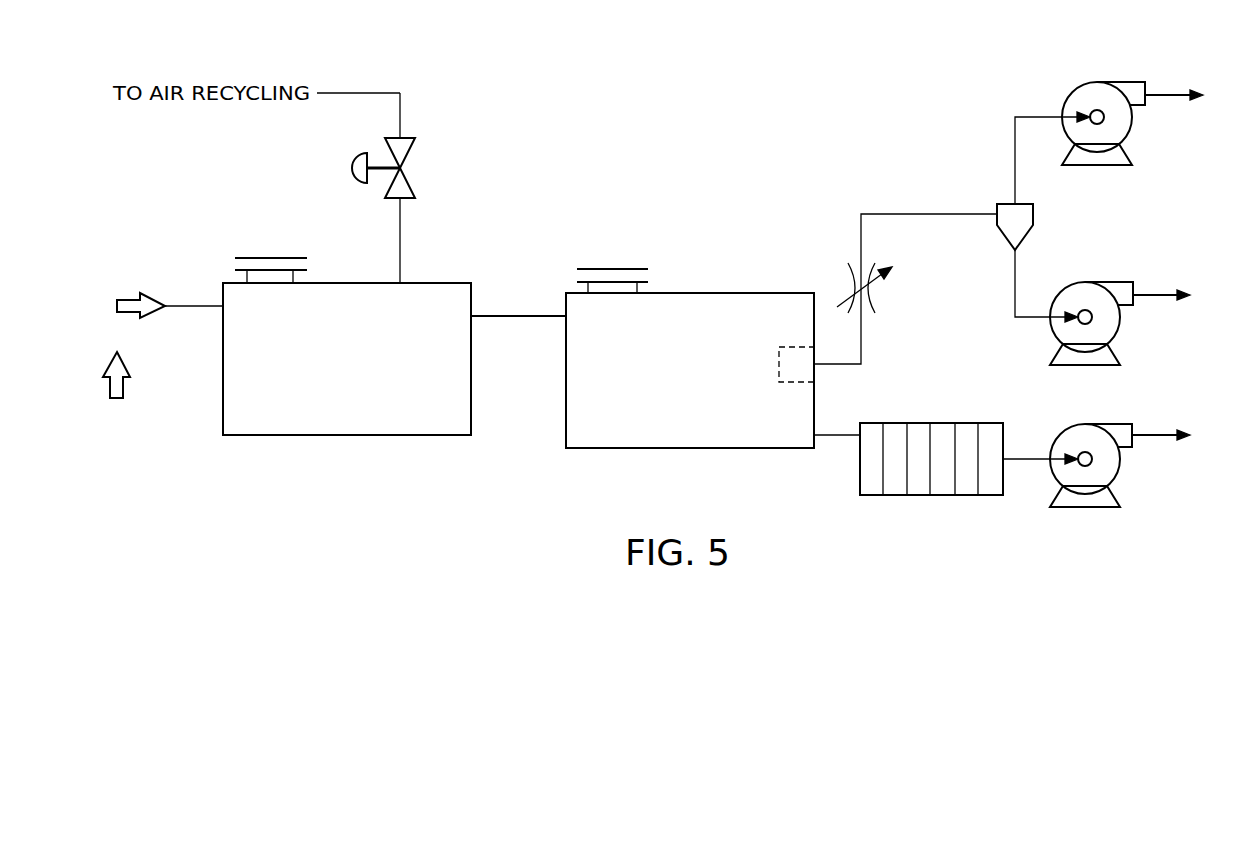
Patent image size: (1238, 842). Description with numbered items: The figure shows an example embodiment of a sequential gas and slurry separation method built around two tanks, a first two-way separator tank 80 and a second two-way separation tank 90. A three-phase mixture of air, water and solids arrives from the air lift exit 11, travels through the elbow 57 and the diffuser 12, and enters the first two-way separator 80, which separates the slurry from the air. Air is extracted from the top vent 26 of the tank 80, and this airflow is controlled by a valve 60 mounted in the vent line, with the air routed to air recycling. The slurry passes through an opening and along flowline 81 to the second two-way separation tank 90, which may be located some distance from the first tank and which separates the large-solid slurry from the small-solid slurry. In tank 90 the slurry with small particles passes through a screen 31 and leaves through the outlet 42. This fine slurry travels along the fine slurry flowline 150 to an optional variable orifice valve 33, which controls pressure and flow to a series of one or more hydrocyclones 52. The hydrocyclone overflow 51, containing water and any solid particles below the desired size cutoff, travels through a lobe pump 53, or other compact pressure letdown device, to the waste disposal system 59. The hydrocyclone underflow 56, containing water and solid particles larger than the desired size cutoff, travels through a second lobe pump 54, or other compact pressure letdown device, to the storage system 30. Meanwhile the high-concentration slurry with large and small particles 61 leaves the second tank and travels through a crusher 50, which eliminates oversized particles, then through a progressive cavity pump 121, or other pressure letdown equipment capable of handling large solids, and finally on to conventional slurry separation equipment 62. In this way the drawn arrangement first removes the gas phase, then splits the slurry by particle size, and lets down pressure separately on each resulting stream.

The air lift exit 11 is at (123, 390).
The diffuser 12 is at (193, 305).
The elbow 57 is at (133, 297).
The first 2-way separator tank 80 is at (347, 435).
The top vent 26 is at (400, 240).
The valve 60 is at (352, 168).
The flowline 81 is at (520, 315).
The second 2-way separation tank 90 is at (688, 448).
The screen 31 is at (778, 363).
The outlet 42 is at (833, 381).
The fine slurry flowline 150 is at (861, 340).
The variable orifice valve 33 is at (870, 297).
The hydrocyclones 52 is at (1035, 212).
The hydrocyclone overflow 51 is at (1015, 160).
The lobe pump 53 is at (1097, 80).
The waste disposal system 59 is at (1167, 90).
The hydrocyclone underflow 56 is at (1015, 283).
The lobe pump 54 is at (1083, 280).
The storage system 30 is at (1157, 297).
The high-concentration slurry 61 is at (838, 437).
The crusher 50 is at (943, 495).
The progressive cavity pump 121 is at (1087, 507).
The conventional slurry separation equipment 62 is at (1157, 438).